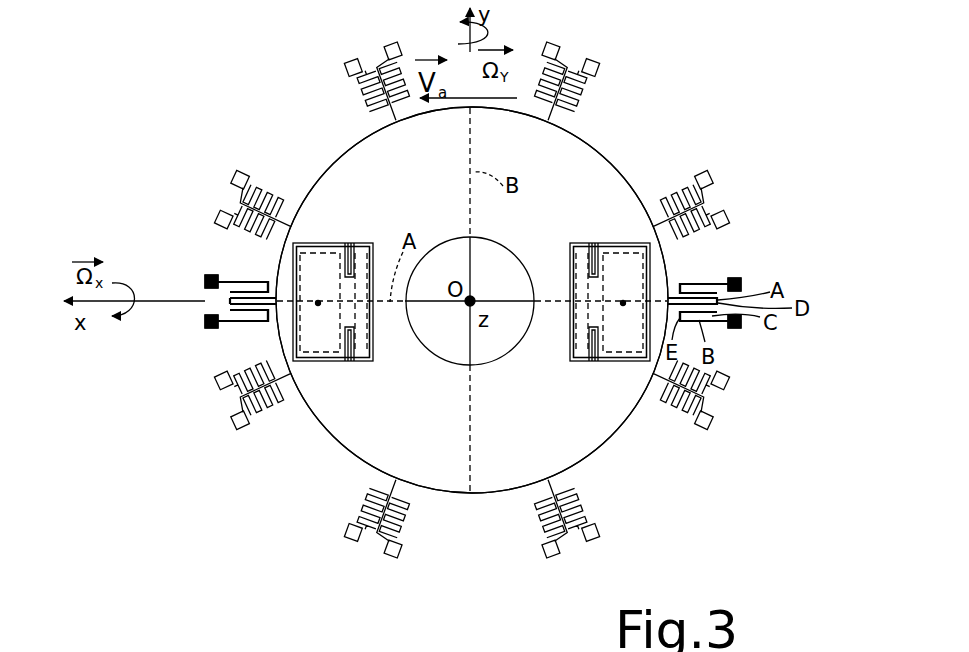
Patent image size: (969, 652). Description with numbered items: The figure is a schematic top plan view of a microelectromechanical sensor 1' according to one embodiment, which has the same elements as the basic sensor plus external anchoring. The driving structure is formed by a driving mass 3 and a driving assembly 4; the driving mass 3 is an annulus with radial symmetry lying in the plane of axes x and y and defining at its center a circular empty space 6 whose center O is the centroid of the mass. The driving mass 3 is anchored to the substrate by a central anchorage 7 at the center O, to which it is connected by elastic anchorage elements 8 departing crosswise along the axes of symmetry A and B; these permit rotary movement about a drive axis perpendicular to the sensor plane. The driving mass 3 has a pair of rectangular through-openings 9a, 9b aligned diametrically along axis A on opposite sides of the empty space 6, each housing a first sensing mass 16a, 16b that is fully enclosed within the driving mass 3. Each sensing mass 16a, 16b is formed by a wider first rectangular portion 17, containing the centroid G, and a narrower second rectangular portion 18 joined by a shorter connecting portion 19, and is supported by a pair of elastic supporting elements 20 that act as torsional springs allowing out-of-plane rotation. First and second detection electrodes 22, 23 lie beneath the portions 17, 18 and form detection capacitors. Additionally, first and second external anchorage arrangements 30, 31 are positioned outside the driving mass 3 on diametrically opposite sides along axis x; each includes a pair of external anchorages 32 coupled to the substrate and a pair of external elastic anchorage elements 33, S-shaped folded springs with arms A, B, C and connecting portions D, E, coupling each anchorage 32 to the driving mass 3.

The microelectromechanical sensor 1' is at (518, 262).
The driving mass 3 is at (355, 148).
The driving assembly 4 is at (345, 510).
The circular empty space 6 is at (515, 343).
The central anchorage 7 is at (473, 298).
The elastic anchorage elements 8 is at (469, 259).
The through-opening 9a is at (305, 347).
The through-opening 9b is at (641, 355).
The first sensing mass 16a is at (337, 243).
The first sensing mass 16b is at (607, 243).
The first rectangular portion 17 is at (305, 246).
The second rectangular portion 18 is at (371, 272).
The connecting portion 19 is at (350, 302).
The elastic supporting elements 20 is at (350, 360).
The first detection electrode 22 is at (322, 358).
The second detection electrode 23 is at (364, 362).
The first external anchorage arrangement 30 is at (207, 268).
The second external anchorage arrangement 31 is at (749, 276).
The external anchorages 32 is at (205, 282).
The external elastic anchorage elements 33 is at (243, 279).